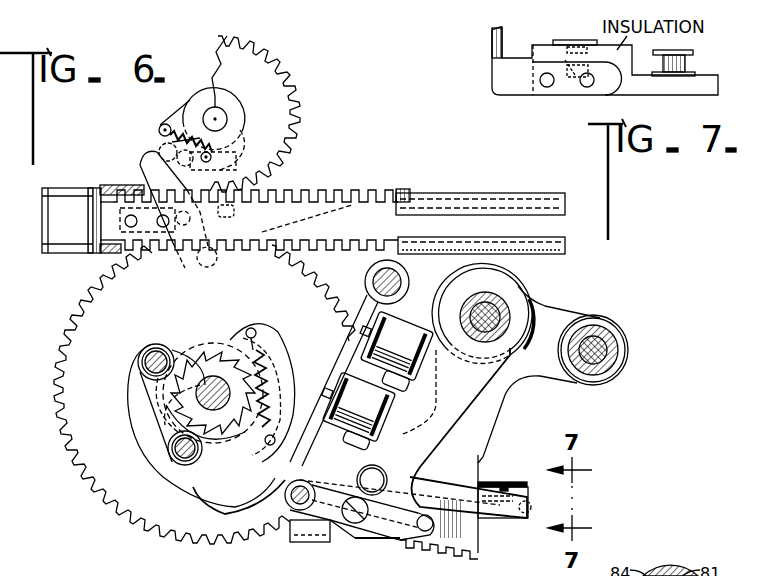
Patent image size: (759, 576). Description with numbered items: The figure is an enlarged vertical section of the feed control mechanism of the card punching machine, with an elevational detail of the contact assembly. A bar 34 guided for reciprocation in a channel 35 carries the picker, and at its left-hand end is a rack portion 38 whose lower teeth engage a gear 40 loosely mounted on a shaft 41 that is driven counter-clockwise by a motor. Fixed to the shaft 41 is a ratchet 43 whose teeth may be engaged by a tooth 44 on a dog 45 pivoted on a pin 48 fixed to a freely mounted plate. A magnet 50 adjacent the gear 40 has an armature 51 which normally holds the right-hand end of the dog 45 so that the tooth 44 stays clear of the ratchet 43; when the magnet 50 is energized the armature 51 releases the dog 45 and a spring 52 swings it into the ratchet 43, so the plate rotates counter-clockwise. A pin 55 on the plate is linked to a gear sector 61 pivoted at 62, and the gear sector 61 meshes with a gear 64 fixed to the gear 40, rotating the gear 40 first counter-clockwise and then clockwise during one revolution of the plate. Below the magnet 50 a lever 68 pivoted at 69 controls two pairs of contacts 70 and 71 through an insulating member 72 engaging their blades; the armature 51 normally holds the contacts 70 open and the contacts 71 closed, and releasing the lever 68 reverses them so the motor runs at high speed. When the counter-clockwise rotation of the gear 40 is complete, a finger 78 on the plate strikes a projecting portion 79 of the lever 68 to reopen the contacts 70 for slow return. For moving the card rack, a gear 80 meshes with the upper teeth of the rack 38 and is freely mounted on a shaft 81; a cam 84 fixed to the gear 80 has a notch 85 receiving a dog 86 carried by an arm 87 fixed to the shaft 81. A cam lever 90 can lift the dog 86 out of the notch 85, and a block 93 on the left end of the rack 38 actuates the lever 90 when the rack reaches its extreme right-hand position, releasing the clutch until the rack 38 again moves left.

In FIG. 6, the bar 34 is at (556, 225).
In FIG. 6, the channel 35 is at (566, 240).
In FIG. 6, the rack portion 38 is at (288, 210).
In FIG. 6, the gear 40 is at (78, 404).
In FIG. 6, the shaft 41 is at (186, 345).
In FIG. 6, the ratchet 43 is at (218, 348).
In FIG. 6, the tooth 44 is at (158, 401).
In FIG. 6, the dog 45 is at (140, 430).
In FIG. 6, the pin 48 is at (140, 360).
In FIG. 6, the magnet 50 is at (371, 380).
In FIG. 6, the armature 51 is at (345, 351).
In FIG. 6, the spring 52 is at (280, 370).
In FIG. 6, the pin 55 is at (170, 452).
In FIG. 6, the gear sector 61 is at (480, 549).
In FIG. 6, the pivot 62 is at (500, 300).
In FIG. 6, the gear 64 is at (200, 342).
In FIG. 6, the lever 68 is at (256, 502).
In FIG. 6, the pivot 69 is at (378, 470).
In FIG. 6, the contacts 70 is at (510, 487).
In FIG. 7, the contacts 70 is at (566, 67).
In FIG. 7, the contacts 71 is at (690, 65).
In FIG. 6, the insulating member 72 is at (520, 489).
In FIG. 7, the insulating member 72 is at (718, 87).
In FIG. 6, the finger 78 is at (255, 328).
In FIG. 6, the projecting portion 79 is at (198, 493).
In FIG. 6, the gear 80 is at (298, 110).
In FIG. 6, the shaft 81 is at (227, 114).
In FIG. 6, the cam 84 is at (207, 98).
In FIG. 6, the notch 85 is at (233, 138).
In FIG. 6, the dog 86 is at (236, 160).
In FIG. 6, the arm 87 is at (652, 570).
In FIG. 6, the cam lever 90 is at (150, 162).
In FIG. 6, the block 93 is at (118, 204).